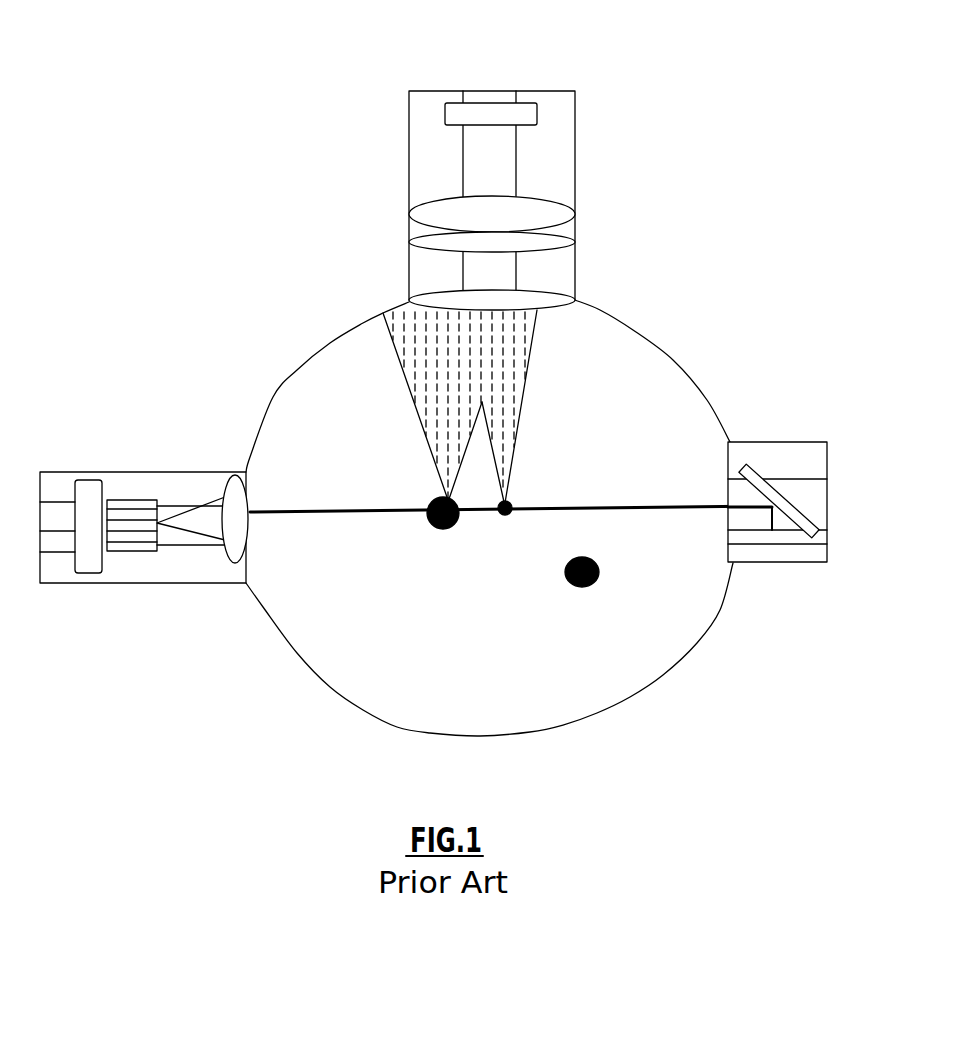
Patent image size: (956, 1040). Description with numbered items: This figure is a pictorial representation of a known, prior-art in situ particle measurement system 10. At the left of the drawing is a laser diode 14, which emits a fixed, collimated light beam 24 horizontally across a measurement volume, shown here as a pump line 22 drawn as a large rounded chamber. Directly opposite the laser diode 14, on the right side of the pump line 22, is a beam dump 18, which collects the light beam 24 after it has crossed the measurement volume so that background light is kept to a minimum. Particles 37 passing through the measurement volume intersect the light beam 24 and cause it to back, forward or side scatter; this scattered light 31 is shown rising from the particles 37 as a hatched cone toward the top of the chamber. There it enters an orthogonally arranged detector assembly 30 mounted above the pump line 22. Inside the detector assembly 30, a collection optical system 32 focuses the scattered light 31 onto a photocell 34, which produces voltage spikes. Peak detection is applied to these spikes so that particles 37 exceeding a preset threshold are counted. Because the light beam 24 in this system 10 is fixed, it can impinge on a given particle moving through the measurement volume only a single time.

The ISPM system 10 is at (730, 178).
The laser diode 14 is at (106, 472).
The beam dump 18 is at (812, 562).
The pump line 22 is at (657, 375).
The light beam 24 is at (655, 510).
The detector assembly 30 is at (507, 175).
The scattered light 31 is at (413, 378).
The collection optical system 32 is at (430, 212).
The photocell 34 is at (452, 103).
The particles 37 is at (453, 530).